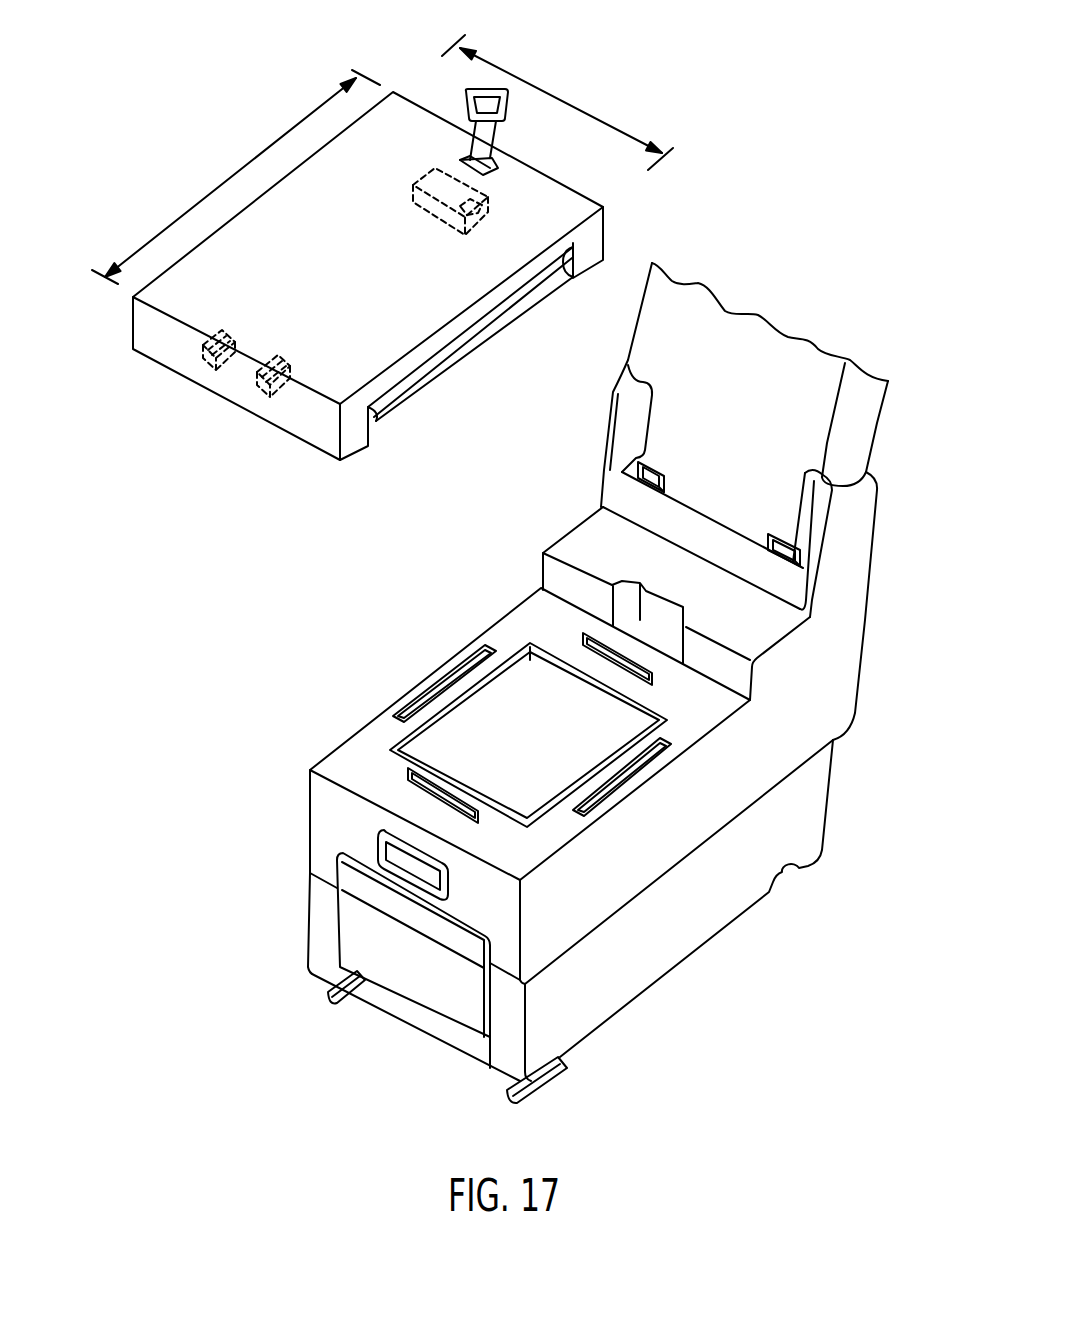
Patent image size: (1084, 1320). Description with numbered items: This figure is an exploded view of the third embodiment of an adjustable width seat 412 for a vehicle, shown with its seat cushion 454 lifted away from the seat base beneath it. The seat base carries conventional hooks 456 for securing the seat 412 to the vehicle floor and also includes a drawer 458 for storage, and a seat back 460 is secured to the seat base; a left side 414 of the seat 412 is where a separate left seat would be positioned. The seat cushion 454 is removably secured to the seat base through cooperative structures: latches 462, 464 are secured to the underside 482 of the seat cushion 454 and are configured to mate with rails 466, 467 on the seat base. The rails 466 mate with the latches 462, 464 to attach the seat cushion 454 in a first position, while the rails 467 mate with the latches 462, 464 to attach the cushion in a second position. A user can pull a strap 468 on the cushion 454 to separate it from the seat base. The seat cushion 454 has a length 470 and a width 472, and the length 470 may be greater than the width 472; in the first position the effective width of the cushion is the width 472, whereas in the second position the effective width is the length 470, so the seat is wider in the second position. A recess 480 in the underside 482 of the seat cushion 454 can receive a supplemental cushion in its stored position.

The seat 412 is at (774, 289).
The left side 414 is at (227, 328).
The seat cushion 454 is at (138, 352).
The hooks 456 is at (328, 997).
The drawer 458 is at (417, 1012).
The seat back 460 is at (882, 428).
The latch 462 is at (414, 172).
The latch 464 is at (433, 382).
The rails 466 is at (628, 656).
The rails 467 is at (433, 683).
The strap 468 is at (465, 92).
The length 470 is at (235, 172).
The width 472 is at (568, 100).
The recess 480 is at (561, 287).
The underside 482 is at (358, 448).